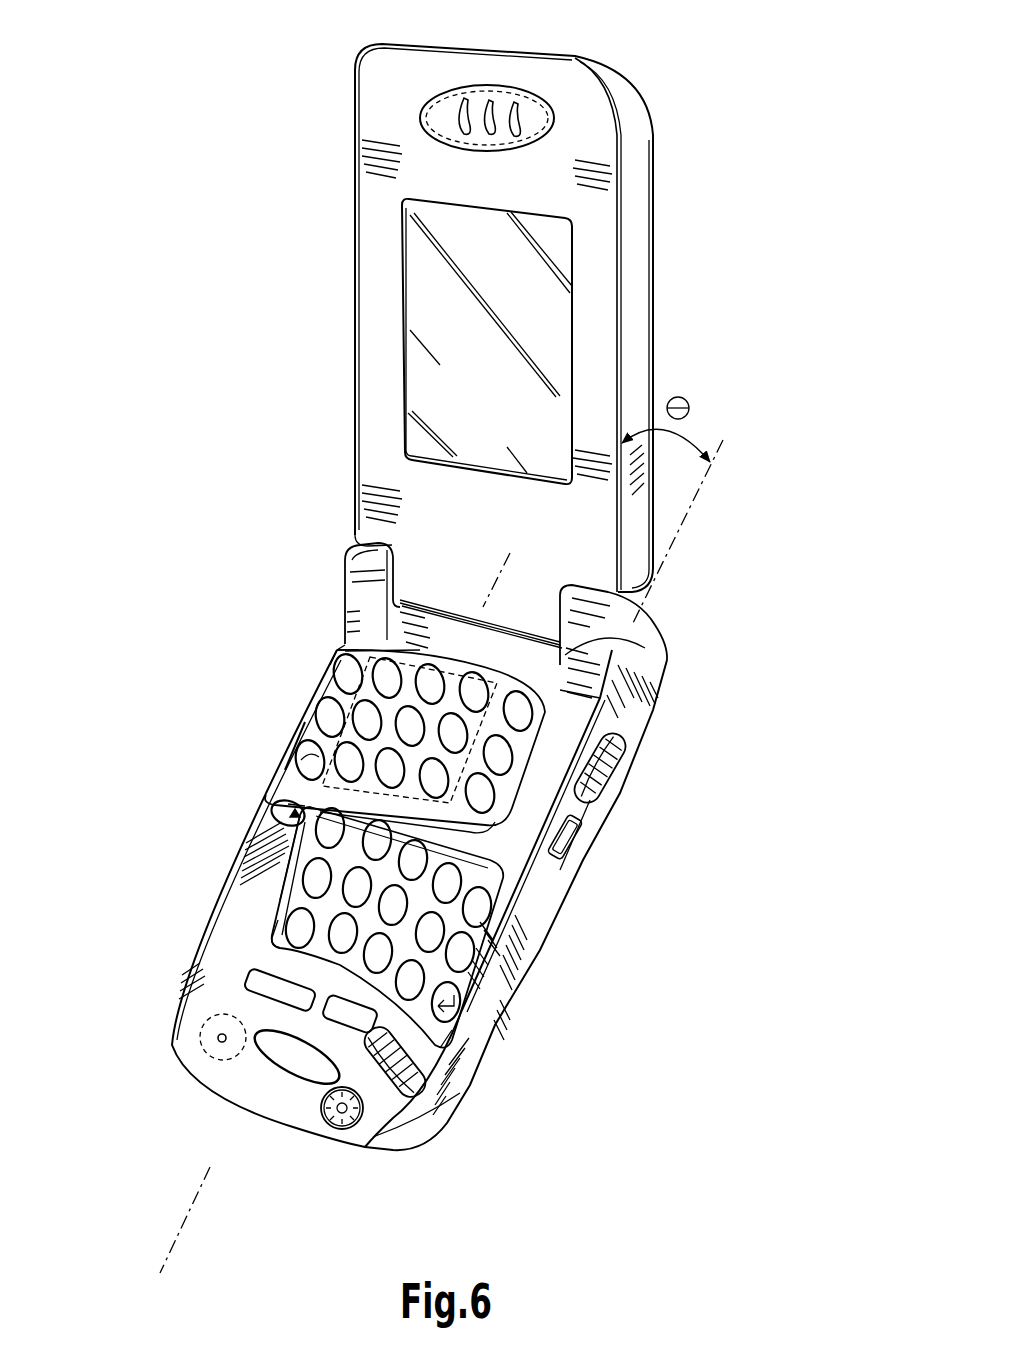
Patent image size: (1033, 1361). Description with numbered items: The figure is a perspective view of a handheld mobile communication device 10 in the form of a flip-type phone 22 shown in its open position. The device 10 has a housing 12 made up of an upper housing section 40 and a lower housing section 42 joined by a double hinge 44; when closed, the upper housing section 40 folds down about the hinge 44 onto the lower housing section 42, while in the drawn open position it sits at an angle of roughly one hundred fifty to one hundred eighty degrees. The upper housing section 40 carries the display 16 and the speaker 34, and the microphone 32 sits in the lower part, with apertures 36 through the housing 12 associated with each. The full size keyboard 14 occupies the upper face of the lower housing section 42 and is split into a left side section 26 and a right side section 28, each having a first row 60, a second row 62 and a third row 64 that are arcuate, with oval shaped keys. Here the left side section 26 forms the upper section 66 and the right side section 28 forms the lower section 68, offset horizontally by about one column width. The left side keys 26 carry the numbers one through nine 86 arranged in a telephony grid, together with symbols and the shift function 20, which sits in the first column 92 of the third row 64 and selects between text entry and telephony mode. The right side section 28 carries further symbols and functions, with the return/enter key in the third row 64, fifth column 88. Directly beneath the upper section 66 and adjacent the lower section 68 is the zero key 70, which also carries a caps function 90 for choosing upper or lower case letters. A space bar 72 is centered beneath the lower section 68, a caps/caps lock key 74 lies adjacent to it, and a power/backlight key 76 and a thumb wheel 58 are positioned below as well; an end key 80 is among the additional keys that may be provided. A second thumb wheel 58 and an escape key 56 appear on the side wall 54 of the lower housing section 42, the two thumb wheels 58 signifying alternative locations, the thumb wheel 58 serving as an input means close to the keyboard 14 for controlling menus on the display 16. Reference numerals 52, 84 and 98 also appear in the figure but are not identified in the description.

The mobile communication device 10 is at (742, 128).
The housing 12 is at (660, 706).
The keyboard 14 is at (381, 878).
The display 16 is at (530, 340).
The shift function 20 is at (293, 765).
The flip-type phone 22 is at (672, 373).
The left side section 26 is at (330, 692).
The right side section 28 is at (278, 930).
The microphone 32 is at (200, 1042).
The speaker 34 is at (505, 92).
The apertures 36 is at (462, 108).
The upper housing section 40 is at (642, 232).
The lower housing section 42 is at (608, 807).
The hinge 44 is at (365, 568).
The brand key 52 is at (303, 1072).
The side wall 54 is at (527, 927).
The escape key 56 is at (574, 842).
The thumb wheel 58 is at (615, 770).
The first row 60 is at (333, 668).
The second row 62 is at (316, 713).
The third row 64 is at (298, 750).
The upper section 66 is at (540, 672).
The lower section 68 is at (453, 1087).
The number zero key 70 is at (270, 813).
The space bar 72 is at (247, 978).
The caps/caps lock key 74 is at (335, 1019).
The power/backlight key 76 is at (350, 1129).
The end key 80 is at (262, 866).
The keyboard edge 84 is at (445, 656).
The numbers one to nine 86 is at (447, 658).
The fifth column 88 is at (513, 693).
The caps function 90 is at (272, 822).
The first column 92 is at (357, 635).
The enter key 98 is at (460, 993).